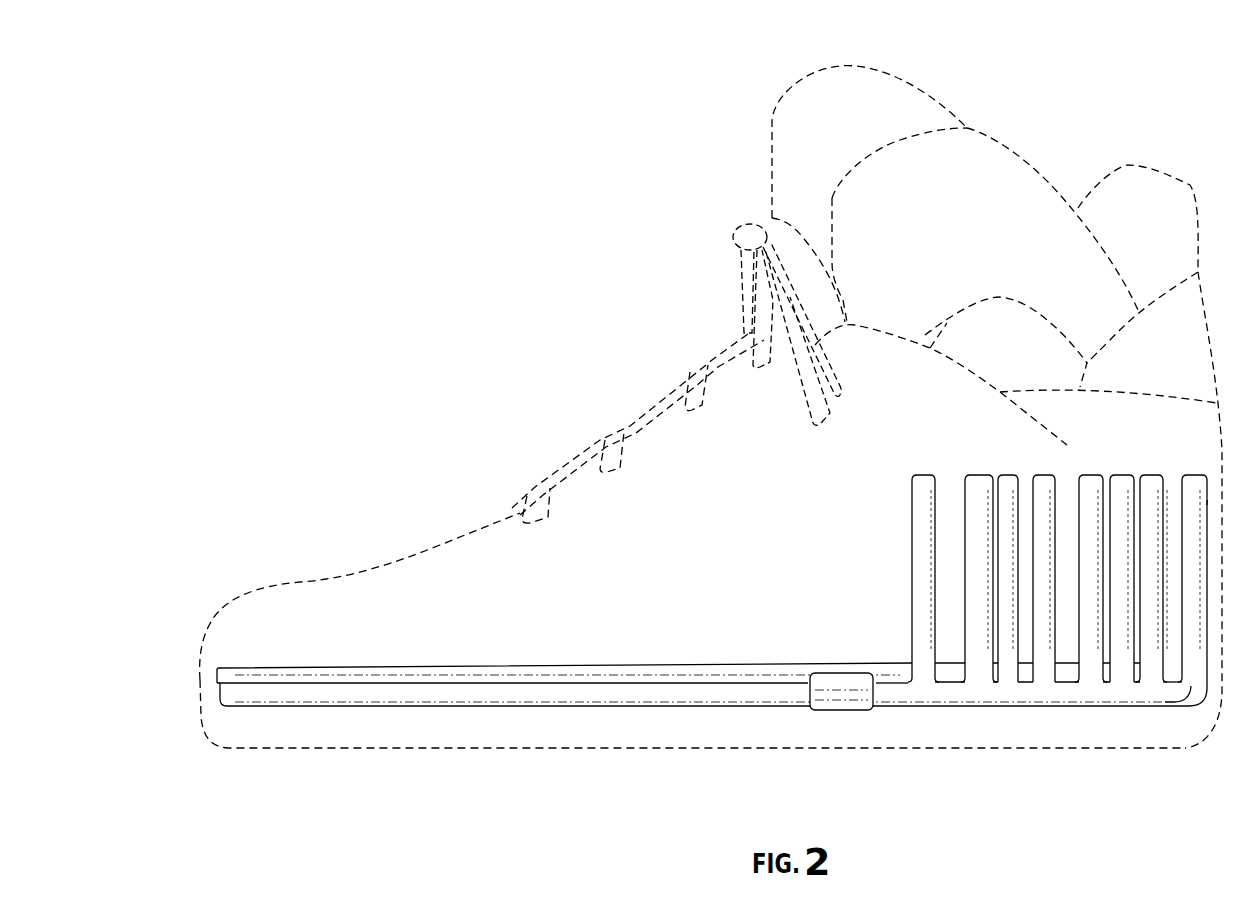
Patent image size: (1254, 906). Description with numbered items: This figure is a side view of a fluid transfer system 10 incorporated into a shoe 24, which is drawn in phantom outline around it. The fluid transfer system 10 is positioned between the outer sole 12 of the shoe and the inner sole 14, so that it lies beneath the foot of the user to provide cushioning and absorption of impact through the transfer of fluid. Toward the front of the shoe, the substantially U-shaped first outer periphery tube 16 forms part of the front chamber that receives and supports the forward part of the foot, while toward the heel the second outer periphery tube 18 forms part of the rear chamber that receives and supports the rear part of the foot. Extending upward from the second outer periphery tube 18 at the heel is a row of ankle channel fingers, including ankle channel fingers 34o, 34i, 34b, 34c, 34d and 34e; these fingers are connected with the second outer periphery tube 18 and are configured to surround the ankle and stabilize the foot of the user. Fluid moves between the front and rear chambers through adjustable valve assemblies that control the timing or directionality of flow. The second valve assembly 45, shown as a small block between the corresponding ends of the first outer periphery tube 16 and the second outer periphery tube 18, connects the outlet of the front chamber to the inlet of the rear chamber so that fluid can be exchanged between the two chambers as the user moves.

The fluid transfer system 10 is at (803, 506).
The outer sole 12 is at (207, 728).
The inner sole 14 is at (410, 667).
The first outer periphery tube 16 is at (468, 693).
The second outer periphery tube 18 is at (1080, 688).
The shoe 24 is at (624, 326).
The ankle channel finger 34o is at (915, 482).
The ankle channel finger 34i is at (965, 480).
The ankle channel finger 34b is at (1013, 480).
The ankle channel finger 34c is at (1090, 482).
The ankle channel finger 34d is at (1148, 482).
The ankle channel finger 34e is at (1193, 482).
The second valve assembly 45 is at (866, 683).